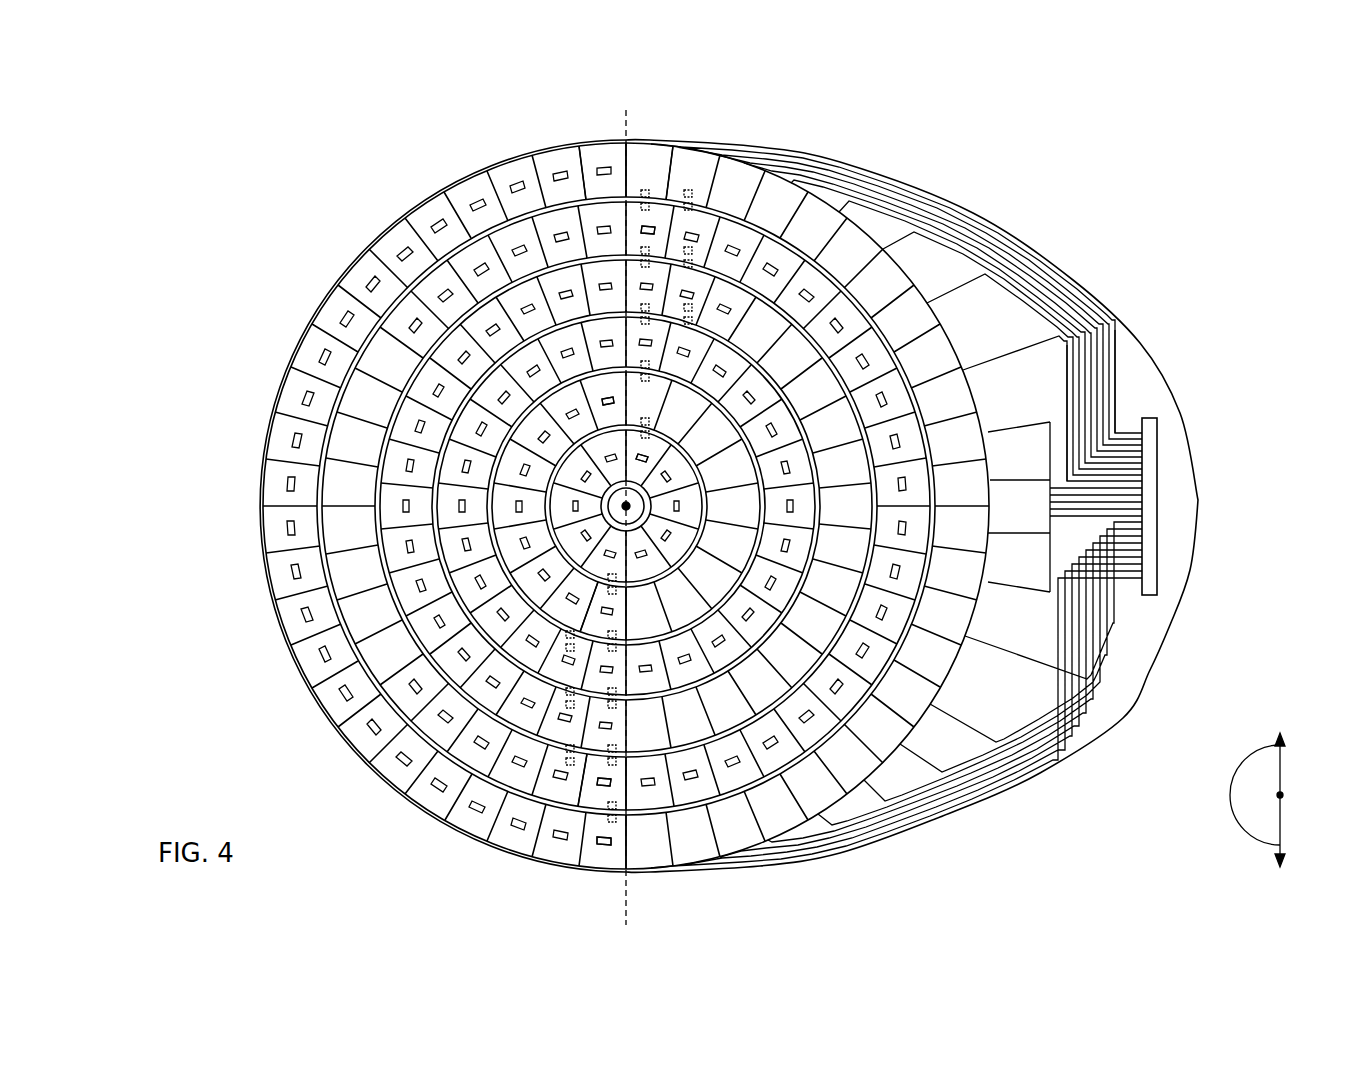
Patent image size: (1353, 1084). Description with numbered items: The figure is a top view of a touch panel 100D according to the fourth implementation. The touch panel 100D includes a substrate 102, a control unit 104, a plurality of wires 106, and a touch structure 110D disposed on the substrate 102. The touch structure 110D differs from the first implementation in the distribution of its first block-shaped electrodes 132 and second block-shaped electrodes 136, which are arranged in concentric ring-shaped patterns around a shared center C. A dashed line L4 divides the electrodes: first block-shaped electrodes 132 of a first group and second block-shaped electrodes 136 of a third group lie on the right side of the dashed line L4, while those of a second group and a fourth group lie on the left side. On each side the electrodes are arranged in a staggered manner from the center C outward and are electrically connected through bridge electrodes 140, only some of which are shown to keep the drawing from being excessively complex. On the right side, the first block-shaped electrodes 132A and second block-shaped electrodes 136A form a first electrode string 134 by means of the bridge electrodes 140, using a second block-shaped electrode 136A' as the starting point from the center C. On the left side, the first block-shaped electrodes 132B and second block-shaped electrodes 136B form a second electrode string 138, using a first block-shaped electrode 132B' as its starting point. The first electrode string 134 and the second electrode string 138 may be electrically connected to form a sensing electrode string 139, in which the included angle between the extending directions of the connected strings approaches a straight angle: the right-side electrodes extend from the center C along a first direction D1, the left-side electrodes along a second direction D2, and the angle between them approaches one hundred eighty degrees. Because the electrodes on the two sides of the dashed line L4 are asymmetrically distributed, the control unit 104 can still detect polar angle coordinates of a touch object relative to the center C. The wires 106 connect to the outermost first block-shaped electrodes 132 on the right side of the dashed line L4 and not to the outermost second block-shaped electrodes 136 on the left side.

The touch panel 100D is at (168, 128).
The substrate 102 is at (1177, 567).
The control unit 104 is at (1158, 437).
The wires 106 is at (1117, 372).
The touch structure 110D is at (248, 690).
The first block-shaped electrodes 132 is at (778, 200).
The first block-shaped electrodes belonging to the first group 132A is at (660, 212).
The first block-shaped electrodes belonging to the second group 132B is at (475, 811).
The first block-shaped electrode belonging to the second group 132B' is at (425, 664).
The first electrode string 134 is at (645, 196).
The second block-shaped electrodes 136 is at (790, 267).
The second block-shaped electrodes belonging to the third group 136A is at (716, 153).
The second block-shaped electrode belonging to the third group 136A' is at (401, 393).
The second block-shaped electrodes belonging to the fourth group 136B is at (600, 840).
The second electrode string 138 is at (600, 878).
The sensing electrode string 139 is at (1153, 116).
The bridge electrodes 140 is at (645, 195).
The dashed line L4 is at (640, 130).
The center C is at (608, 509).
The first direction D1 is at (1283, 850).
The second direction D2 is at (1283, 741).